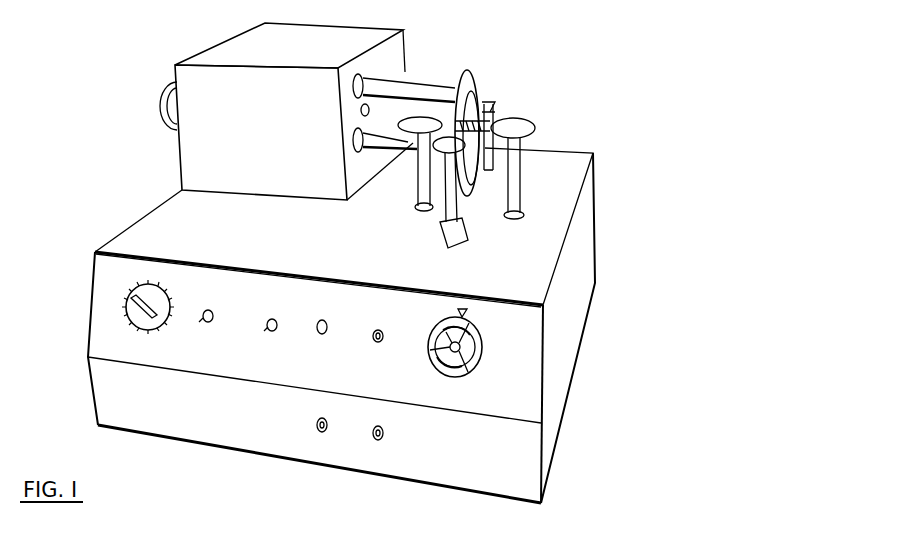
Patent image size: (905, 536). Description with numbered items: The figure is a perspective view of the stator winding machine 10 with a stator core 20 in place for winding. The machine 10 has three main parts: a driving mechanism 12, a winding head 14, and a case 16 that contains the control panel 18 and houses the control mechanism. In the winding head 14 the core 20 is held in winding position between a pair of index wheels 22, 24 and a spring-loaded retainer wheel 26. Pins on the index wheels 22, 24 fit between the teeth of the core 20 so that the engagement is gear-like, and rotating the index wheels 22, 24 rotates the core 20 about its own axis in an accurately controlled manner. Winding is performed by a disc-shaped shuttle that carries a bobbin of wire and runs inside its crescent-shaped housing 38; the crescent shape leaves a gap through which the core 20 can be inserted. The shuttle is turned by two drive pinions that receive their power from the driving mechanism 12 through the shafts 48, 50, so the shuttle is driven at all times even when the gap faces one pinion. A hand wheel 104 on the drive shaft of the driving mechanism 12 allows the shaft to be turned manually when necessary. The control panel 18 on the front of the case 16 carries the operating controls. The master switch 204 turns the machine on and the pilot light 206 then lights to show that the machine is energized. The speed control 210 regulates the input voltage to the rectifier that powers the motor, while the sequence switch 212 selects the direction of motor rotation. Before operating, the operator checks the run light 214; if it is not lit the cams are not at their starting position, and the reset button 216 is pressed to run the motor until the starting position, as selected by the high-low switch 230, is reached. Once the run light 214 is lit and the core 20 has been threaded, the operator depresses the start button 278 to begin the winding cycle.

The machine 10 is at (432, 31).
The driving mechanism 12 is at (221, 28).
The winding head 14 is at (512, 82).
The case 16 is at (108, 218).
The control panel 18 is at (518, 361).
The core 20 is at (490, 124).
The index wheel 22 is at (536, 128).
The index wheel 24 is at (412, 133).
The retainer wheel 26 is at (445, 148).
The housing 38 is at (470, 88).
The shaft 48 is at (428, 87).
The shaft 50 is at (367, 142).
The hand wheel 104 is at (165, 107).
The master switch 204 is at (272, 320).
The pilot light 206 is at (326, 325).
The speed control 210 is at (138, 312).
The sequence switch 212 is at (469, 342).
The run light 214 is at (382, 334).
The reset button 216 is at (383, 436).
The high-low switch 230 is at (214, 315).
The start button 278 is at (316, 427).